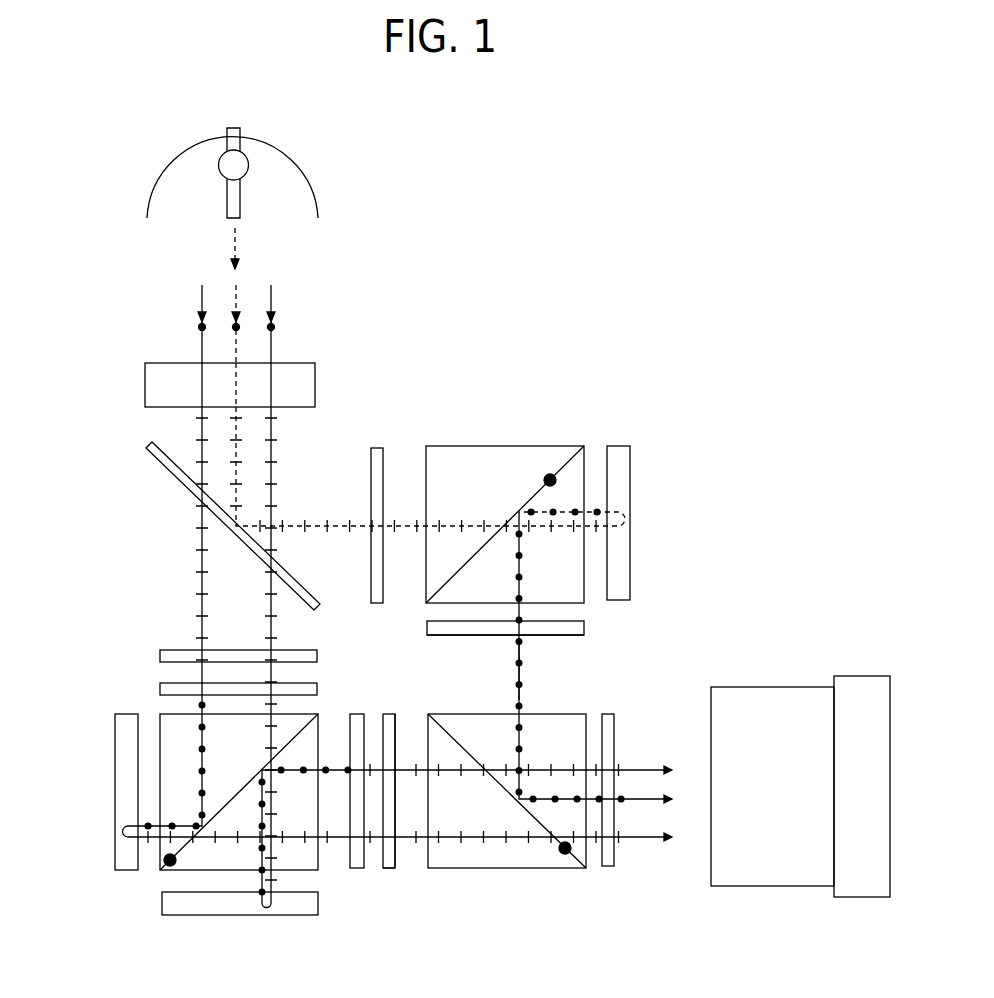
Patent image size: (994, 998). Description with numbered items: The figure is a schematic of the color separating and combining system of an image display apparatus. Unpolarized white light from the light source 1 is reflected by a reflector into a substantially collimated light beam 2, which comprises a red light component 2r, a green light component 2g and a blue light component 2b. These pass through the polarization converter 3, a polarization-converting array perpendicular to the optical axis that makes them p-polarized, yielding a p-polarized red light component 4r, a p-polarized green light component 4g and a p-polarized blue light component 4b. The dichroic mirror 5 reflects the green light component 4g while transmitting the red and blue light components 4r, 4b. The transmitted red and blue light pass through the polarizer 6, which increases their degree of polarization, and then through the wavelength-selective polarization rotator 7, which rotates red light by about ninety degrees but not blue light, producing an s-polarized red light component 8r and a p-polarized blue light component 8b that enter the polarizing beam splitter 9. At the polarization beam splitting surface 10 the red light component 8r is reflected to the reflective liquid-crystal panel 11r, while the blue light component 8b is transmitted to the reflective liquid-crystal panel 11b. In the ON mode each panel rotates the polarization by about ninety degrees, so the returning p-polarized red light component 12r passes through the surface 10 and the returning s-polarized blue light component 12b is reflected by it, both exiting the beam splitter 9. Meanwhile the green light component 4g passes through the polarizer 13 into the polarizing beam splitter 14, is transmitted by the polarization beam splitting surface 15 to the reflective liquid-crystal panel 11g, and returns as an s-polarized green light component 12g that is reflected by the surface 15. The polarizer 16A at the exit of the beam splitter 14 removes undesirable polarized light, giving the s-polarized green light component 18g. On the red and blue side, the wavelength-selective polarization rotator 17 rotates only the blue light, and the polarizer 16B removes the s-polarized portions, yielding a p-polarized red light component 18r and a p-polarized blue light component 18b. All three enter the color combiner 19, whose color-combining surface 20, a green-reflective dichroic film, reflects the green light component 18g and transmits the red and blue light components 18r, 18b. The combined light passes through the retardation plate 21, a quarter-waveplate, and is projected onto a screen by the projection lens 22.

The light source 1 is at (238, 165).
The collimated light beam 2 is at (236, 248).
The red light component 2r is at (202, 297).
The green light component 2g is at (236, 297).
The blue light component 2b is at (271, 308).
The polarization converter 3 is at (150, 380).
The p-polarized red light component 4r is at (203, 440).
The p-polarized green light component 4g is at (236, 440).
The p-polarized blue light component 4b is at (272, 440).
The dichroic mirror 5 is at (148, 458).
The polarizer 6 is at (167, 650).
The wavelength-selective polarization rotator 7 is at (160, 683).
The s-polarized red light component 8r is at (200, 728).
The p-polarized blue light component 8b is at (272, 703).
The polarizing beam splitter 9 is at (170, 728).
The polarization beam splitting surface 10 is at (170, 862).
The reflective liquid-crystal panel 11r is at (122, 797).
The reflective liquid-crystal panel 11g is at (620, 470).
The reflective liquid-crystal panel 11b is at (240, 914).
The p-polarized red light component 12r is at (330, 845).
The s-polarized green light component 12g is at (522, 585).
The s-polarized blue light component 12b is at (330, 769).
The polarizer 13 is at (377, 450).
The polarizing beam splitter 14 is at (476, 460).
The polarization beam splitting surface 15 is at (550, 480).
The polarizer 16A is at (578, 638).
The polarizer 16B is at (393, 870).
The wavelength-selective polarization rotator 17 is at (357, 870).
The p-polarized red light component 18r is at (388, 870).
The s-polarized green light component 18g is at (521, 662).
The p-polarized blue light component 18b is at (387, 714).
The color combiner 19 is at (465, 869).
The color-combining surface 20 is at (565, 850).
The retardation plate 21 is at (608, 868).
The projection lens 22 is at (783, 695).